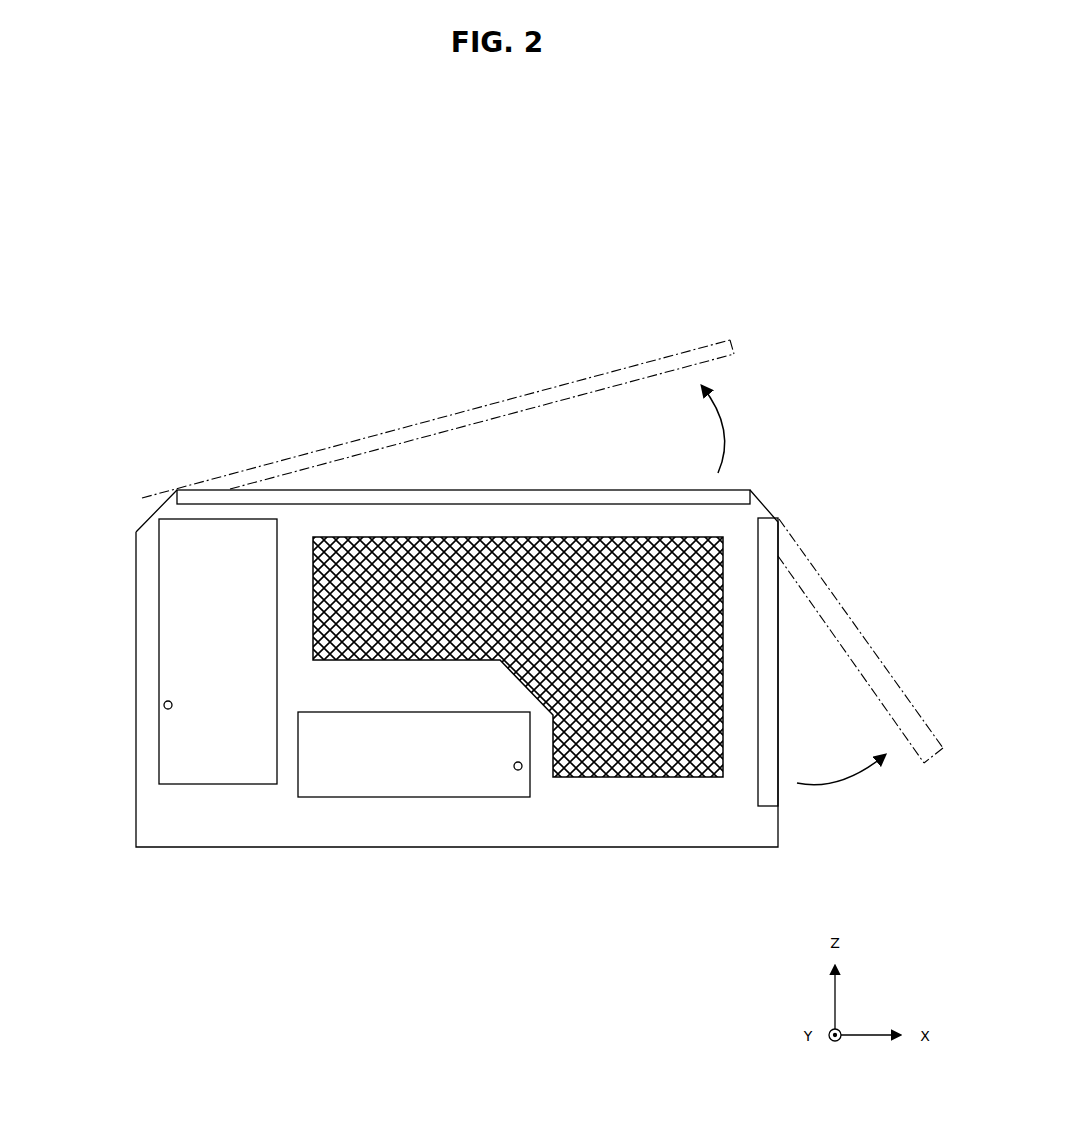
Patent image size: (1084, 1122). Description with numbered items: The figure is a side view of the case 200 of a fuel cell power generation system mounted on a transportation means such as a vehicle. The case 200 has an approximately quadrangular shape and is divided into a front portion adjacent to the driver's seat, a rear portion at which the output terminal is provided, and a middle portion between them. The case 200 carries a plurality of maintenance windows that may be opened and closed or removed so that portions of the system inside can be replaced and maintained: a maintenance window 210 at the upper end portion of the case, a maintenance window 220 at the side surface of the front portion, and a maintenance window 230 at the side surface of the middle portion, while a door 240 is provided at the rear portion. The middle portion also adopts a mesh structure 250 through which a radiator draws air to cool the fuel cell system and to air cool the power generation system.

The case 200 is at (76, 313).
The maintenance window 210 is at (475, 500).
The maintenance window 220 is at (180, 614).
The maintenance window 230 is at (382, 780).
The door 240 is at (766, 630).
The mesh structure 250 is at (598, 755).